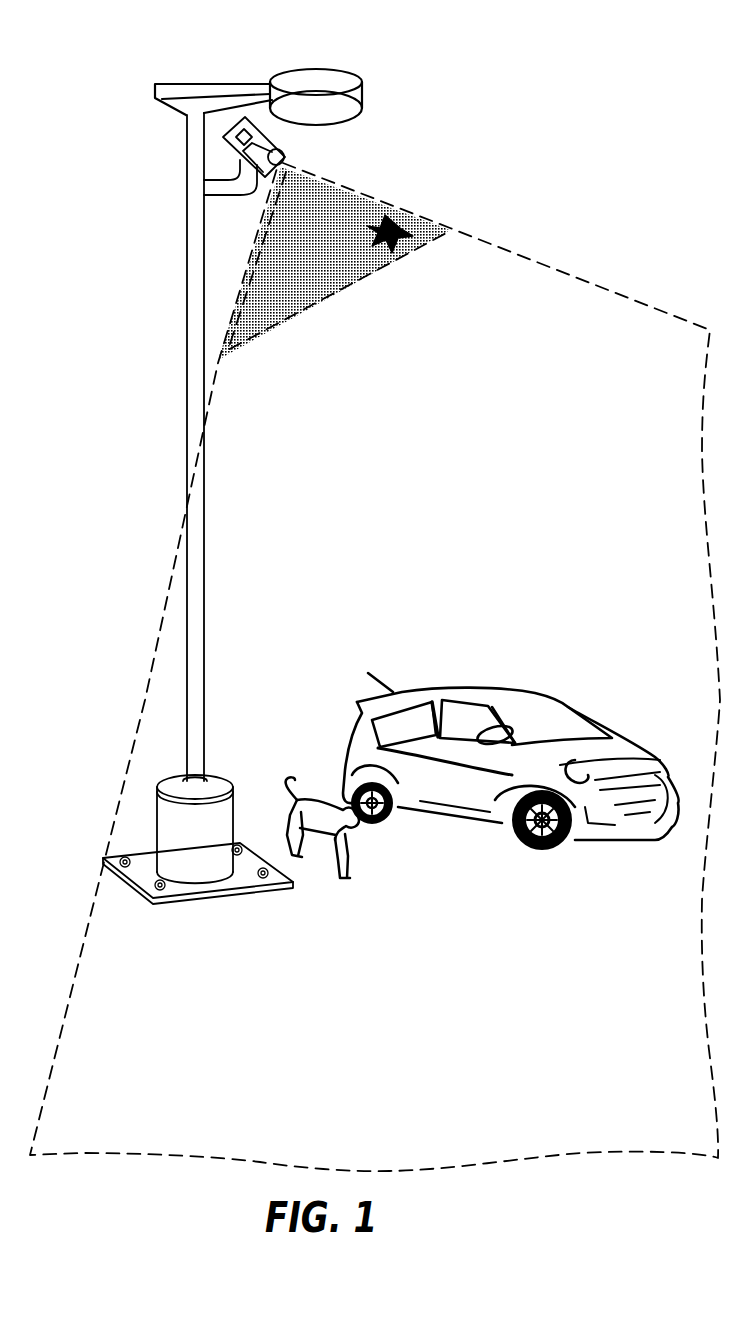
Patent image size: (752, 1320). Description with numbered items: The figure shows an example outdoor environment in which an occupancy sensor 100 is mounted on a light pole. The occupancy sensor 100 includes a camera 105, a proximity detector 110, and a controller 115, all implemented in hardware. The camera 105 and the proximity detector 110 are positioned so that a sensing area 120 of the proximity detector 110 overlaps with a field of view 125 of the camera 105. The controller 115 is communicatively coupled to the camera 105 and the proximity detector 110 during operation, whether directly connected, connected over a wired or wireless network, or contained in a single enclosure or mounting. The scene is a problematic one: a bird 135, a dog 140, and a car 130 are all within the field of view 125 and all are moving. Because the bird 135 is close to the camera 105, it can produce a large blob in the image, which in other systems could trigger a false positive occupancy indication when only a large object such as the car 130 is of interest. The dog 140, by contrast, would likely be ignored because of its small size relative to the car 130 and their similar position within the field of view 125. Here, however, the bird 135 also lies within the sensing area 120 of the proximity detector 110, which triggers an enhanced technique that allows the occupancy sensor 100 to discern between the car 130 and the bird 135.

The occupancy sensor 100 is at (598, 25).
The camera 105 is at (287, 153).
The proximity detector 110 is at (243, 167).
The controller 115 is at (236, 138).
The sensing area 120 is at (312, 310).
The field of view 125 is at (568, 274).
The car 130 is at (455, 688).
The bird 135 is at (368, 227).
The dog 140 is at (345, 880).